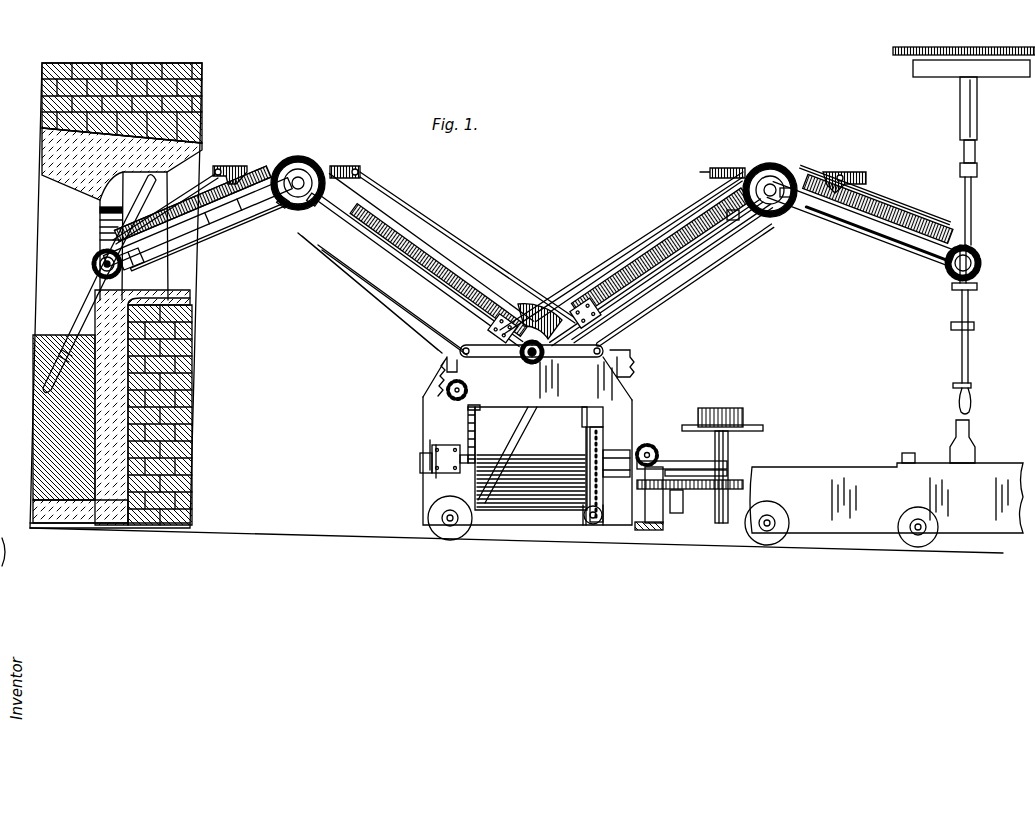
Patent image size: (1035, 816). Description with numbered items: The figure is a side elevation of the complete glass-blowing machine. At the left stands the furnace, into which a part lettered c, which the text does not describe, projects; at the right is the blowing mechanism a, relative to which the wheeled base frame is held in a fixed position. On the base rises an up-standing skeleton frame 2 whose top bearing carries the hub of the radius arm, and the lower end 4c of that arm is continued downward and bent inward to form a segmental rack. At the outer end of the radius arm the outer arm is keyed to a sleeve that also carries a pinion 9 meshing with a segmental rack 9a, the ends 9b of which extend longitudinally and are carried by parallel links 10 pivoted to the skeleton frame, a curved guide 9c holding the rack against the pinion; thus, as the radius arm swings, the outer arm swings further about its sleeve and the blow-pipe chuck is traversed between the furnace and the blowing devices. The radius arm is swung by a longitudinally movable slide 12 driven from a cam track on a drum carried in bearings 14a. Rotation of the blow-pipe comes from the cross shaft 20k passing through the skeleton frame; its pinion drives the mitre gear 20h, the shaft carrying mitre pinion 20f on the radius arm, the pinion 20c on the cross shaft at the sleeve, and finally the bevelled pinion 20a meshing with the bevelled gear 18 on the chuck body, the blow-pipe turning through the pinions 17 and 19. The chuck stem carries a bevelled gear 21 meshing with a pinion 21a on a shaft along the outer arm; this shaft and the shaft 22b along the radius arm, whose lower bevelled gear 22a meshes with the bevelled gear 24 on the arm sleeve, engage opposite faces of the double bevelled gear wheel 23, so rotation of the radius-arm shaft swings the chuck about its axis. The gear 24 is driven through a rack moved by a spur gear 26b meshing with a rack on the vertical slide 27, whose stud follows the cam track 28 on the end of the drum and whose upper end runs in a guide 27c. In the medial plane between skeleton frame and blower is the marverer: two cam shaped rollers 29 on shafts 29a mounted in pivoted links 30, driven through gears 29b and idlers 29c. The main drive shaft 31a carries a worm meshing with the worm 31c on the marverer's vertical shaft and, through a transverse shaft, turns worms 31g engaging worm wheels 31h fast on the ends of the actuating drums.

The skeleton frame 2 is at (588, 372).
The lower end of the radius arm 4c is at (632, 353).
The pinion 9 is at (235, 170).
The segmental rack 9a is at (285, 207).
The ends of the segmental rack 9b is at (284, 163).
The curved guide 9c is at (312, 212).
The parallel links 10 is at (455, 248).
The slide 12 is at (420, 470).
The bearings 14a is at (422, 457).
The pinion 17 is at (973, 247).
The bevelled gear 18 is at (92, 264).
The pinion 19 is at (950, 277).
The bevelled pinion 20a is at (387, 287).
The pinion 20c is at (557, 357).
The mitre pinion 20f is at (380, 190).
The mitre gear 20h is at (460, 343).
The cross shaft 20k is at (433, 361).
The bevelled gear 21 is at (97, 270).
The pinion 21a is at (125, 272).
The bevelled gear 22a is at (694, 300).
The shaft 22b is at (666, 282).
The double bevelled gear wheel 23 is at (306, 162).
The bevelled gear 24 is at (543, 303).
The spur gear 26b is at (447, 390).
The vertical slide 27 is at (470, 408).
The guide 27c is at (483, 402).
The cam track 28 is at (430, 458).
The cam shaped rollers 29 is at (743, 412).
The shafts 29a is at (647, 495).
The gears 29b is at (700, 490).
The idlers 29c is at (677, 507).
The links 30 is at (703, 473).
The main drive shaft 31a is at (653, 450).
The worm 31c is at (657, 458).
The worm 31g is at (587, 524).
The worm wheel 31h is at (603, 423).
The blowing mechanism a is at (963, 100).
The lance tip c is at (138, 211).